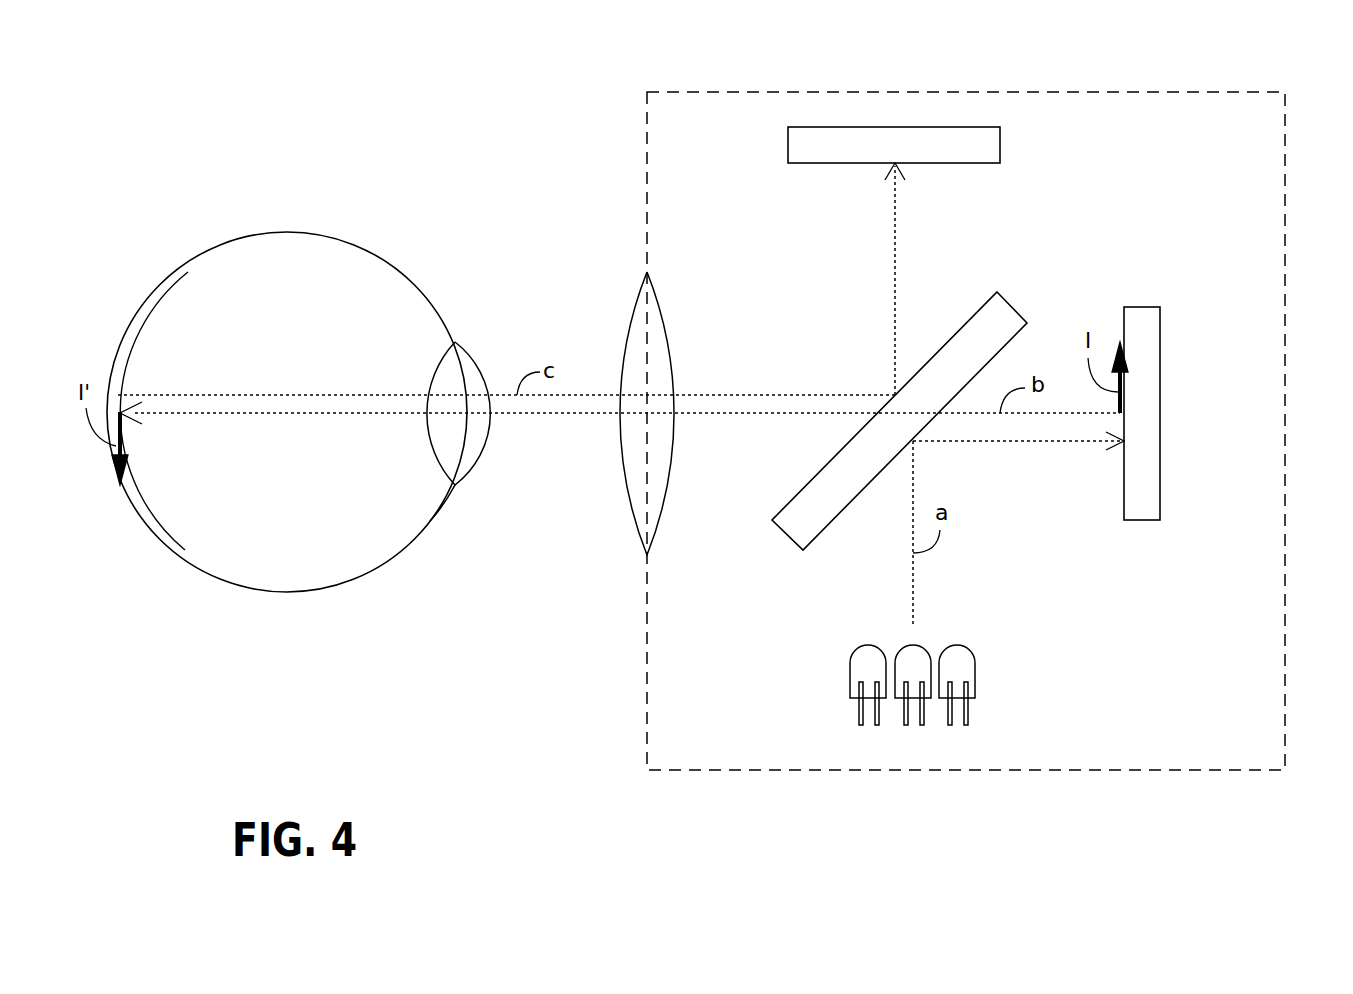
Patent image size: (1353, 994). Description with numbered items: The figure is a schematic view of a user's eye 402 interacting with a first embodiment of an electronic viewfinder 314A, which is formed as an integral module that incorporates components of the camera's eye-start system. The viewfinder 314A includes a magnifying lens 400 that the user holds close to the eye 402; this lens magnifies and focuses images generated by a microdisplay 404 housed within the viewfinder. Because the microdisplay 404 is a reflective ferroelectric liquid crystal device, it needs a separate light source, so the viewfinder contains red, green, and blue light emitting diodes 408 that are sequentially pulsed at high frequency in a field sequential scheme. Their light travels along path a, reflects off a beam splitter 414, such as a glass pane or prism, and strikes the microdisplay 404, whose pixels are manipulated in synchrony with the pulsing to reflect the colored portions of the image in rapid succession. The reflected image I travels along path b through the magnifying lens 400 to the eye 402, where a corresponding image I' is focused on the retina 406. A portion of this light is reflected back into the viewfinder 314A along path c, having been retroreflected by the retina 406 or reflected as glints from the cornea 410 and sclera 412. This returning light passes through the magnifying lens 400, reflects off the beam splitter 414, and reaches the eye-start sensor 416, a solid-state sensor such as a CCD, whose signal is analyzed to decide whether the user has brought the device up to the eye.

The electronic viewfinder 314A is at (1240, 92).
The magnifying lens 400 is at (663, 320).
The eye 402 is at (349, 203).
The microdisplay 404 is at (1153, 323).
The retina 406 is at (128, 365).
The light emitting diodes 408 is at (1014, 666).
The cornea 410 is at (477, 360).
The sclera 412 is at (443, 508).
The beam splitter 414 is at (998, 327).
The eye-start sensor 416 is at (965, 155).